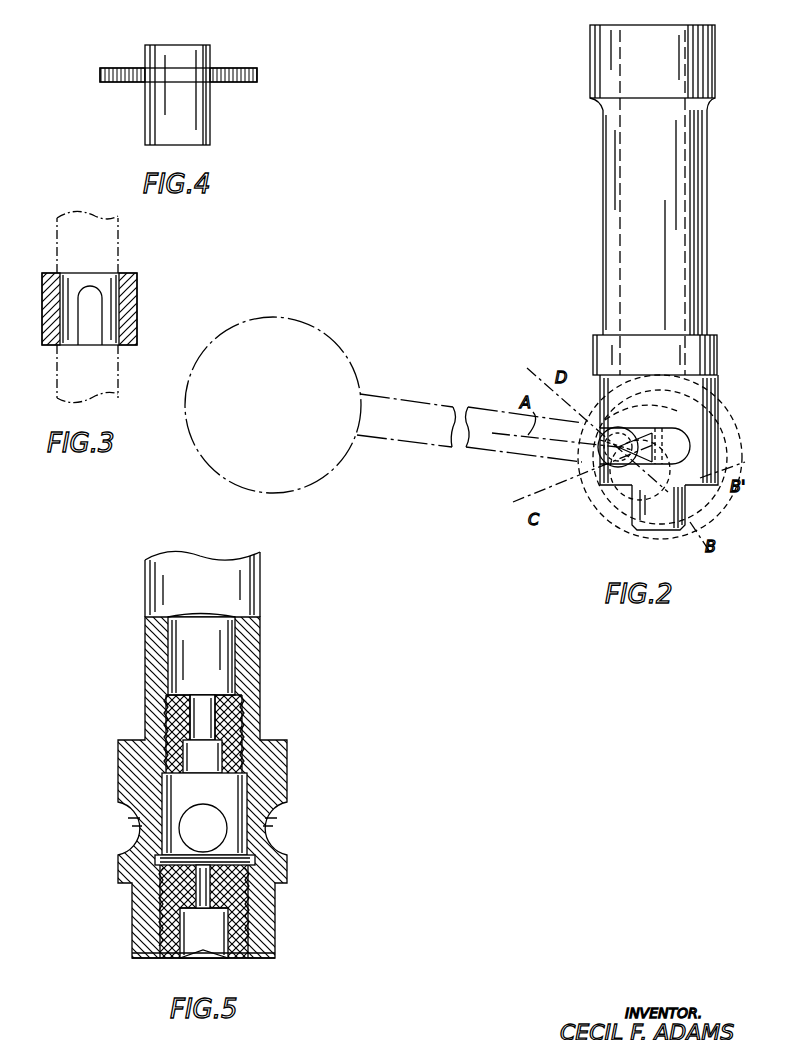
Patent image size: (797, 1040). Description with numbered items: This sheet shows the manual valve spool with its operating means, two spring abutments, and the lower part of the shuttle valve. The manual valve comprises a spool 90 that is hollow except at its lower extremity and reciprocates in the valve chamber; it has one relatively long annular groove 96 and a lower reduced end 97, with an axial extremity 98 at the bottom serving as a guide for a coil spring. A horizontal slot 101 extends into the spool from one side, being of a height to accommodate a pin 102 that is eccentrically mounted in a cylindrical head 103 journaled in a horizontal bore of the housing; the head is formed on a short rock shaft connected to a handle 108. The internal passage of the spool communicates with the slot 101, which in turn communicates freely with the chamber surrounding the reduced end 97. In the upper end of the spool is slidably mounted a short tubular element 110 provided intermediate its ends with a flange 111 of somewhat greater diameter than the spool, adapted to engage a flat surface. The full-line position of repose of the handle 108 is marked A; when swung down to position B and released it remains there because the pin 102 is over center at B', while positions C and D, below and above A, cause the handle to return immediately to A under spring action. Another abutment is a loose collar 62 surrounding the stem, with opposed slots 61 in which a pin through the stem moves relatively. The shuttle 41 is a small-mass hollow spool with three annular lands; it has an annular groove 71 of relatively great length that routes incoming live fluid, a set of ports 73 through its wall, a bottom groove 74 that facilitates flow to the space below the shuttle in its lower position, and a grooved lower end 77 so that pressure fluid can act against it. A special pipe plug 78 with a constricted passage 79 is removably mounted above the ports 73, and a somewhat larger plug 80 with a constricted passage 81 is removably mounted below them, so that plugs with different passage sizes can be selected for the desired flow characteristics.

In FIG. 5, the shuttle 41 is at (253, 658).
In FIG. 3, the slots 61 is at (102, 336).
In FIG. 3, the loose collar 62 is at (130, 308).
In FIG. 5, the annular groove 71 is at (265, 688).
In FIG. 5, the ports 73 is at (214, 837).
In FIG. 5, the bottom groove 74 is at (280, 915).
In FIG. 5, the groove 77 is at (140, 957).
In FIG. 5, the pipe plug 78 is at (243, 730).
In FIG. 5, the constricted passage 79 is at (203, 720).
In FIG. 5, the plug 80 is at (263, 940).
In FIG. 5, the constricted passage 81 is at (190, 897).
In FIG. 2, the spool 90 is at (662, 280).
In FIG. 2, the annular groove 96 is at (707, 165).
In FIG. 2, the reduced end 97 is at (718, 402).
In FIG. 2, the axial extremity 98 is at (652, 522).
In FIG. 2, the horizontal slot 101 is at (690, 442).
In FIG. 2, the pin 102 is at (598, 455).
In FIG. 2, the cylindrical head 103 is at (605, 512).
In FIG. 2, the handle 108 is at (445, 448).
In FIG. 4, the tubular element 110 is at (210, 112).
In FIG. 4, the flange 111 is at (257, 75).